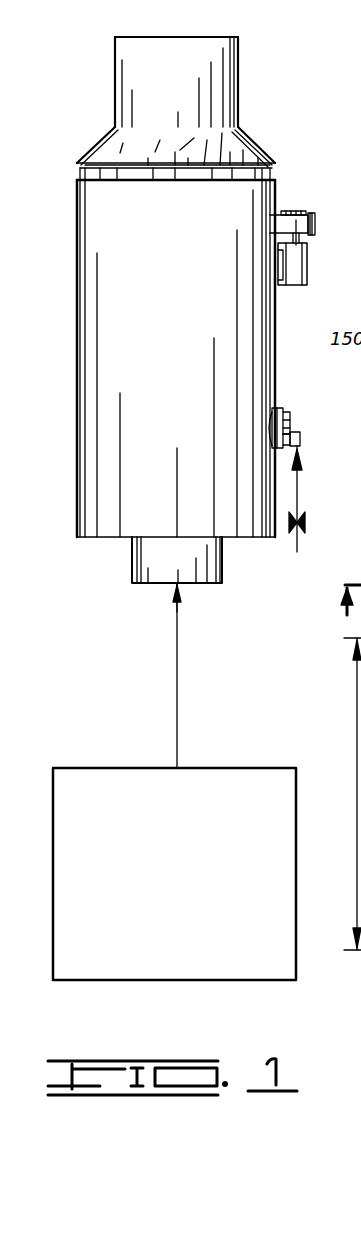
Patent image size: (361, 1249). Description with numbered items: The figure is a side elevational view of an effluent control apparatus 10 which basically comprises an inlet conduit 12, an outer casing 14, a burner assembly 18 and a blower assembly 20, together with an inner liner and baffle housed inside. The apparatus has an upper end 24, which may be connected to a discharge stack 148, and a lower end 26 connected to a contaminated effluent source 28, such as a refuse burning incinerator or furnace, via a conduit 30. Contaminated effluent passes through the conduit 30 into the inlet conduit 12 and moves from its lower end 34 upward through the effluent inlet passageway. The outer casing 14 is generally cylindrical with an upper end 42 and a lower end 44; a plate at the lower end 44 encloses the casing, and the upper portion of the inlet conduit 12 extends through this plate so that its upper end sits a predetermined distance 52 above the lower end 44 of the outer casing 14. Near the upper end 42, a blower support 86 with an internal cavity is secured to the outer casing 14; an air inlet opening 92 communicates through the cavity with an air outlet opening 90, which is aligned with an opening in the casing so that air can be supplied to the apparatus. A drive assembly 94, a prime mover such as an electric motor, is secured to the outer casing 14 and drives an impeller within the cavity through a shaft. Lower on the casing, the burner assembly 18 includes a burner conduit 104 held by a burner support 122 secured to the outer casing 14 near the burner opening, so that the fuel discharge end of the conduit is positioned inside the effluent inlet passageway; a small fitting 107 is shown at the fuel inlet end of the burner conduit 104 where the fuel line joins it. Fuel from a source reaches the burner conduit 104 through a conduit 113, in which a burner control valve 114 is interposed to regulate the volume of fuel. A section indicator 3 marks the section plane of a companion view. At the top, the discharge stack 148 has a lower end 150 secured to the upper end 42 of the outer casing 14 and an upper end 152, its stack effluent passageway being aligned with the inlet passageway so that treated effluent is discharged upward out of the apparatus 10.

The effluent control apparatus 10 is at (297, 172).
The inlet conduit 12 is at (222, 573).
The outer casing 14 is at (112, 333).
The burner assembly 18 is at (282, 398).
The blower assembly 20 is at (316, 219).
The upper end 24 is at (86, 176).
The lower end 26 is at (243, 538).
The contaminated effluent source 28 is at (180, 983).
The conduit 30 is at (180, 713).
The lower end 34 is at (195, 585).
The upper end 42 is at (104, 162).
The lower end 44 is at (90, 540).
The predetermined distance 52 is at (356, 713).
The blower support 86 is at (310, 227).
The air outlet opening 90 is at (300, 240).
The air inlet opening 92 is at (290, 211).
The drive assembly 94 is at (306, 272).
The burner conduit 104 is at (292, 431).
The outlet port 107 is at (302, 440).
The conduit 113 is at (299, 487).
The burner control valve 114 is at (303, 518).
The burner support 122 is at (285, 410).
The discharge stack 148 is at (238, 60).
The lower end 150 is at (150, 182).
The upper end 152 is at (213, 37).
The section line 3 is at (341, 600).